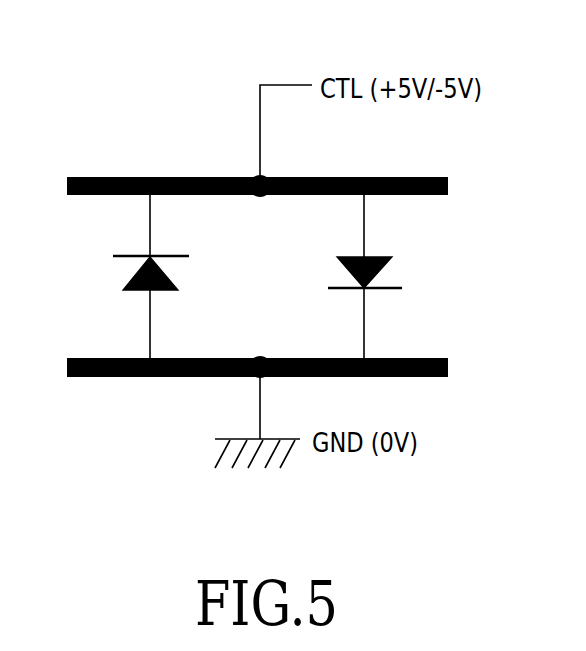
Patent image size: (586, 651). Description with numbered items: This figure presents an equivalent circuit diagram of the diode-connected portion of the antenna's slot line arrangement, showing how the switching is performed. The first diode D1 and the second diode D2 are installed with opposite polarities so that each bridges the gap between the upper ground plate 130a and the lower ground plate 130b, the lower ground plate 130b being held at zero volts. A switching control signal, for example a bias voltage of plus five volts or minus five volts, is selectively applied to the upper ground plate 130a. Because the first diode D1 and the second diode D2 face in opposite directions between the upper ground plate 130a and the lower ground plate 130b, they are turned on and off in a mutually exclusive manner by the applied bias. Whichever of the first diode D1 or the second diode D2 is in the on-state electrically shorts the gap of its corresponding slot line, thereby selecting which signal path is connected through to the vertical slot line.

The upper ground plate 130a is at (105, 177).
The lower ground plate 130b is at (109, 378).
The first diode D1 is at (390, 276).
The second diode D2 is at (126, 276).